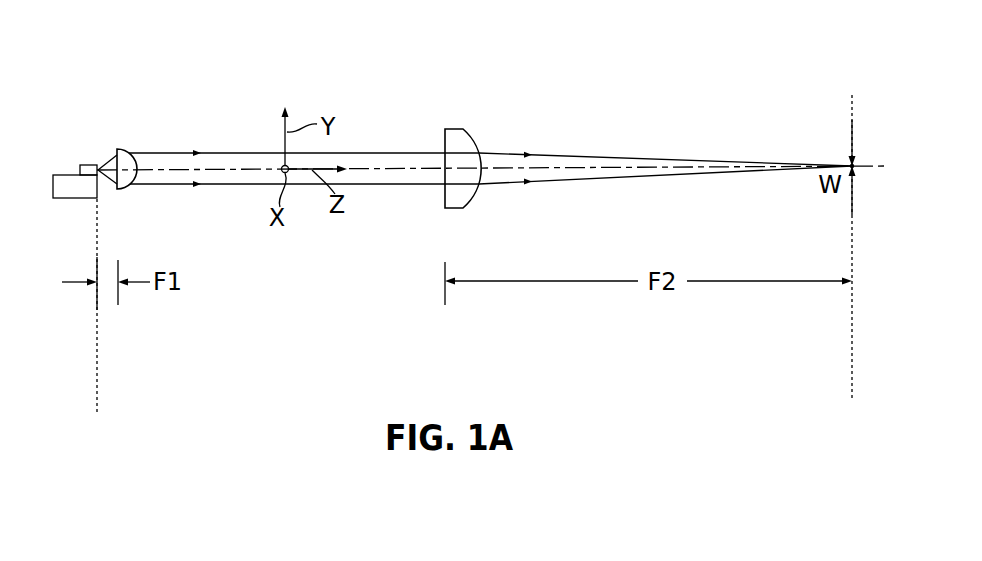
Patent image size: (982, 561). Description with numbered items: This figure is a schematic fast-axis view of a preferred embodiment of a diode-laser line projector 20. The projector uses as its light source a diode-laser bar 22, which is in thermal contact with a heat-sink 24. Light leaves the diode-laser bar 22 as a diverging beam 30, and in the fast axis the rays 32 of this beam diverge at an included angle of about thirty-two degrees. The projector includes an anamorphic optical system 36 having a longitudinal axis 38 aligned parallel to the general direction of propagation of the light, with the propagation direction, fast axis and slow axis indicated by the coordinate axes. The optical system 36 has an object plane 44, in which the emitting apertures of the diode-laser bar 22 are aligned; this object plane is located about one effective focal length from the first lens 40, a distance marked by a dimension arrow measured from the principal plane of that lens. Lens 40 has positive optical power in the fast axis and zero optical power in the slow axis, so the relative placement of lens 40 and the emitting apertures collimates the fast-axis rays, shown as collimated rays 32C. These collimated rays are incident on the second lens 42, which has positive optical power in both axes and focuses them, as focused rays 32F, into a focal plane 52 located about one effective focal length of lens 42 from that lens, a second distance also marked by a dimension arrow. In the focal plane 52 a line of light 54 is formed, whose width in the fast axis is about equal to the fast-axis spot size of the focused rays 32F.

The diode-laser line projector 20 is at (587, 45).
The diode-laser bar 22 is at (89, 165).
The heat-sink 24 is at (80, 199).
The diverging beam 30 is at (109, 199).
The rays 32 is at (105, 158).
The collimated rays 32C is at (232, 152).
The focused rays 32F is at (570, 155).
The optical system 36 is at (330, 312).
The longitudinal axis 38 is at (403, 171).
The lens 40 is at (123, 152).
The lens 42 is at (473, 205).
The object plane 44 is at (97, 330).
The focal plane 52 is at (852, 336).
The line of light 54 is at (849, 160).